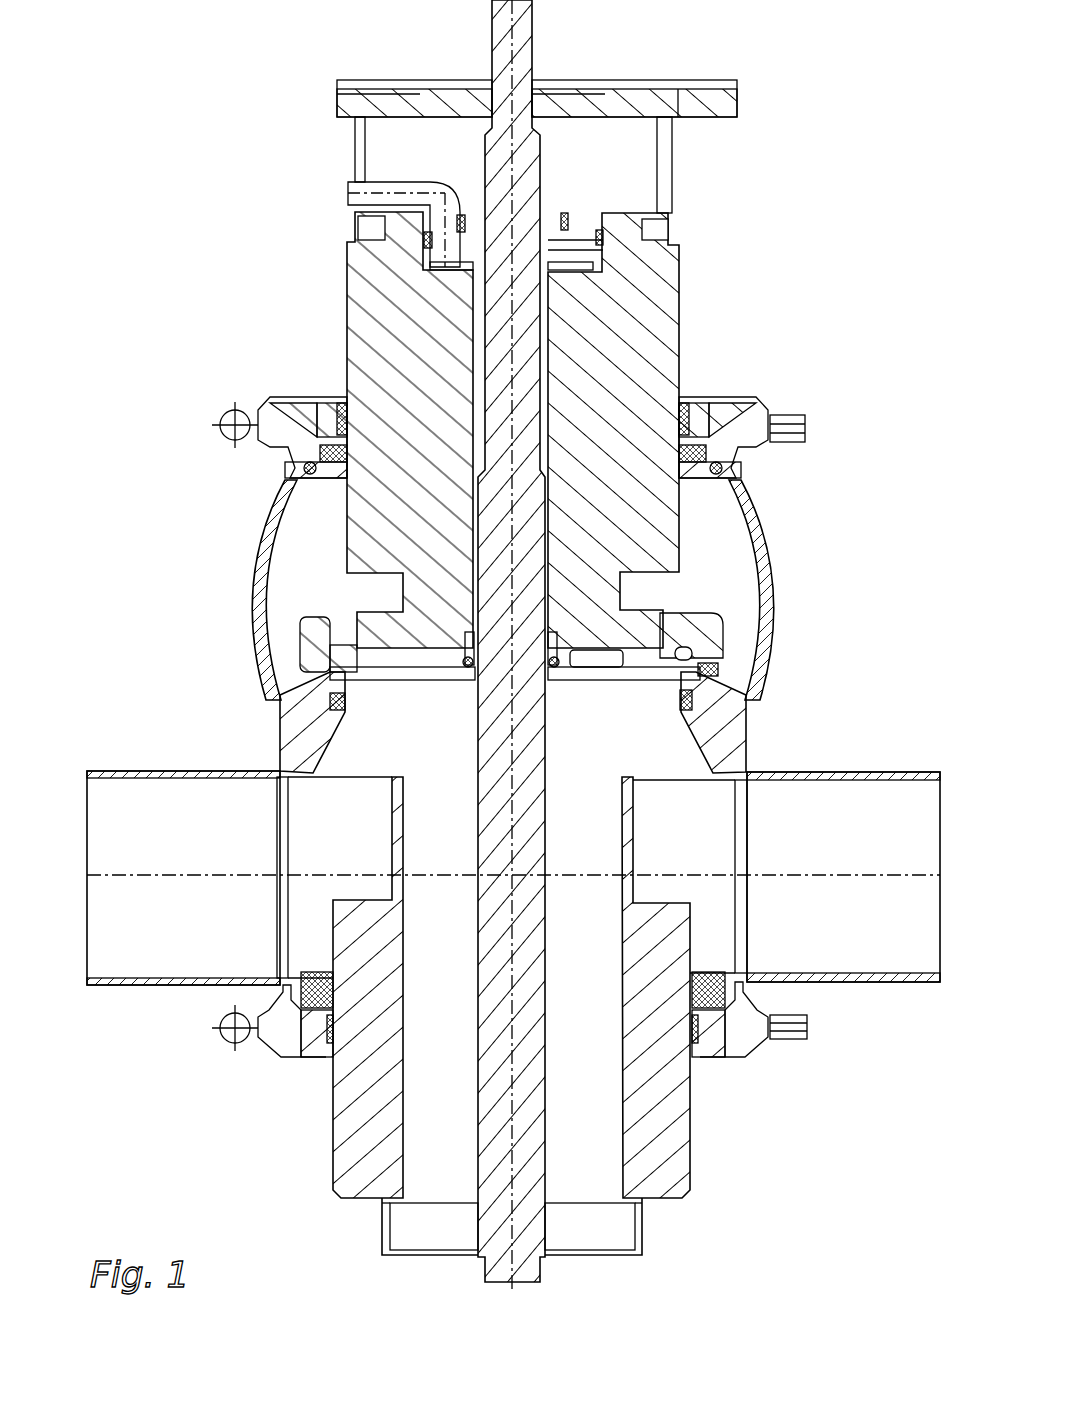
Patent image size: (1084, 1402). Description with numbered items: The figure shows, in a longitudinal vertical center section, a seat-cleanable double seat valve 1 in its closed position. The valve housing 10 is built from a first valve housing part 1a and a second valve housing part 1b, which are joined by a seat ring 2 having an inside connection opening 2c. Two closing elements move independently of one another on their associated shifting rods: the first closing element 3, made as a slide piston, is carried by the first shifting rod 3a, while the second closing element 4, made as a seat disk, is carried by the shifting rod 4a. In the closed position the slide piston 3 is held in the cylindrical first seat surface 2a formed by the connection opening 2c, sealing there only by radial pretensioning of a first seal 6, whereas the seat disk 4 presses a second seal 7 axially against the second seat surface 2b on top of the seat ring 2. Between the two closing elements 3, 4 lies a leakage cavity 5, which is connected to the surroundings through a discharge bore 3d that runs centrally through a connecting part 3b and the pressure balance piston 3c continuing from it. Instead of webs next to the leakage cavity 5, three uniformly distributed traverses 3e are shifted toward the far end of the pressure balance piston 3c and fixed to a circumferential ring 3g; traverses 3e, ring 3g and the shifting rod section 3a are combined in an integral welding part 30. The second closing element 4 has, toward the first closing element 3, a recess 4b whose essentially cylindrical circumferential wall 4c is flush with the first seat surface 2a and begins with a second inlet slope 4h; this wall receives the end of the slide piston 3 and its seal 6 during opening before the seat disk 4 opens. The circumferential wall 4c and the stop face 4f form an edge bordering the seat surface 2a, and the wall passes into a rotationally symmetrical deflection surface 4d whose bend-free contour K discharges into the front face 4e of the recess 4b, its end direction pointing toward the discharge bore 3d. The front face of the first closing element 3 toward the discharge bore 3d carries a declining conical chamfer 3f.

The double seat valve 1 is at (190, 682).
The first valve housing part 1a is at (283, 917).
The second valve housing part 1b is at (268, 506).
The seat ring 2 is at (300, 706).
The first seat surface 2a is at (340, 712).
The second seat surface 2b is at (300, 630).
The connection opening 2c is at (400, 678).
The first closing element 3 is at (650, 703).
The first shifting rod 3a is at (512, 345).
The connecting part 3b is at (397, 818).
The pressure balance piston 3c is at (368, 1100).
The discharge bore 3d is at (445, 950).
The traverses 3e is at (588, 1225).
The conical chamfer 3f is at (645, 705).
The circumferential ring 3g is at (385, 1230).
The second closing element 4 is at (712, 633).
The second shifting rod 4a is at (633, 293).
The recess 4b is at (595, 655).
The circumferential wall 4c is at (678, 653).
The deflection surface 4d is at (708, 635).
The front face 4e is at (615, 656).
The stop face 4f is at (703, 663).
The second inlet slope 4h is at (337, 672).
The leakage cavity 5 is at (454, 704).
The first seal 6 is at (692, 702).
The second seal 7 is at (714, 650).
The valve housing 10 is at (262, 742).
The integral welding part 30 is at (668, 1233).
The contour K is at (355, 640).